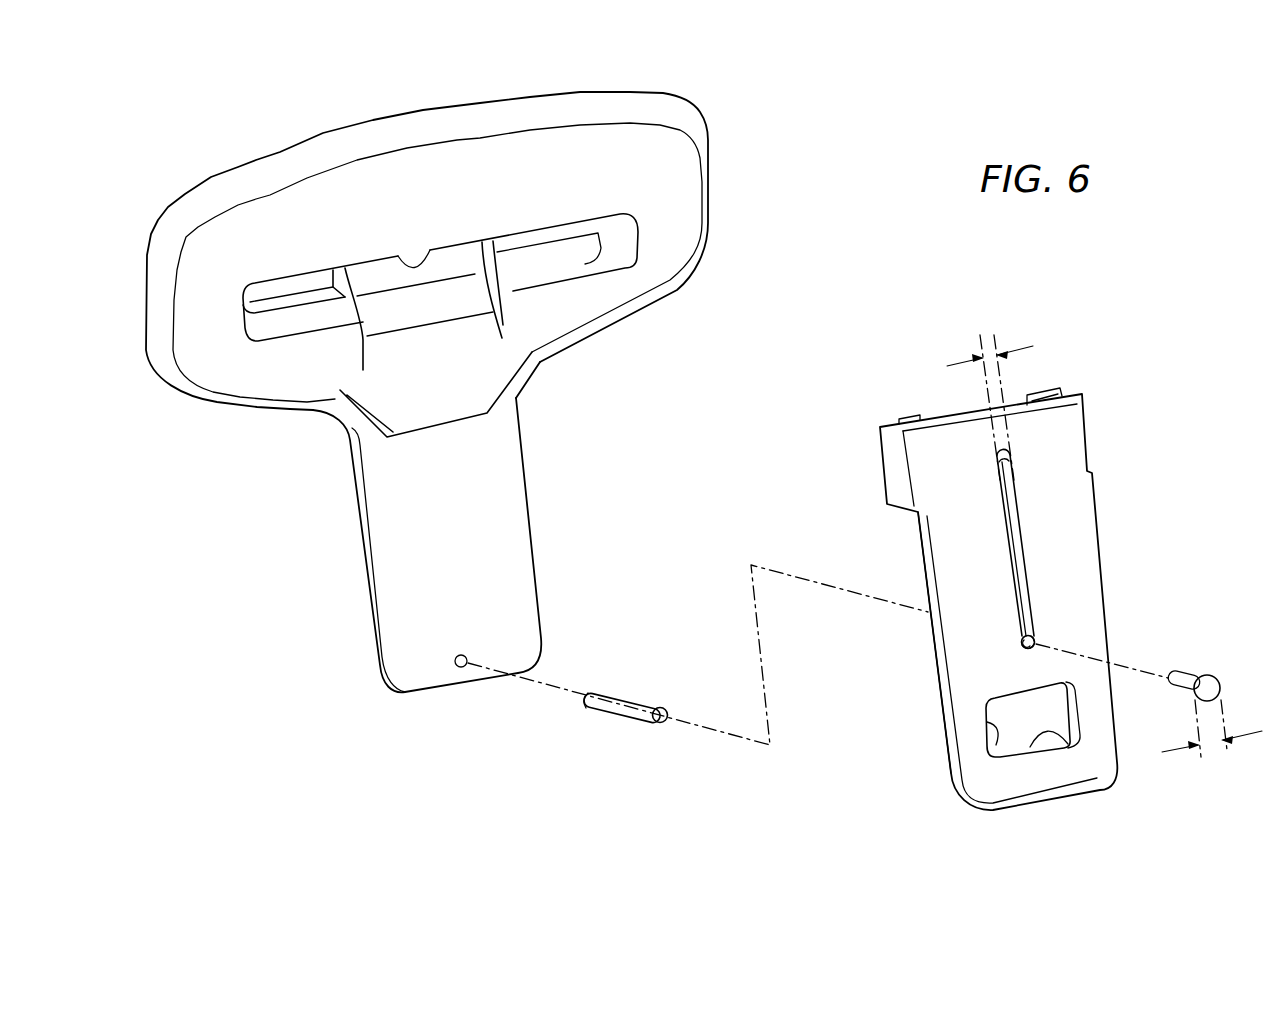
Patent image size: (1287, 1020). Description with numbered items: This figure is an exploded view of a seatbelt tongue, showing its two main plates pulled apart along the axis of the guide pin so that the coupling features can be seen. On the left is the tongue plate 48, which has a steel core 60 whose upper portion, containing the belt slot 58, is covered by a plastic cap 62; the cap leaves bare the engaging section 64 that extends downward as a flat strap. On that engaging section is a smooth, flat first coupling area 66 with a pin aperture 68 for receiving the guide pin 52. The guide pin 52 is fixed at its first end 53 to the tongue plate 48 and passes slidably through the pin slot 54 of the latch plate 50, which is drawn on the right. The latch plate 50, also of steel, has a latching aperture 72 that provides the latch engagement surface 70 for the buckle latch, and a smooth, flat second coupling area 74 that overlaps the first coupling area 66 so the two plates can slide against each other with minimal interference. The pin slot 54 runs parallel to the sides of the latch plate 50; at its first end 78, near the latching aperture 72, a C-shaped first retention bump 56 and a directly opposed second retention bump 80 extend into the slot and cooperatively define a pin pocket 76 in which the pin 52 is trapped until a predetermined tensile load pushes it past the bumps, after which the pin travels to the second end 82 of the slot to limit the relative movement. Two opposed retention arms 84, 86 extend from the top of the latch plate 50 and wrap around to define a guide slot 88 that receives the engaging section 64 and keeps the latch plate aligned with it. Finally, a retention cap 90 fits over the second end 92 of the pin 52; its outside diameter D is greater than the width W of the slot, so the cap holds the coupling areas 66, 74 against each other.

The tongue plate 48 is at (342, 428).
The latch plate 50 is at (1100, 570).
The guide pin 52 is at (616, 714).
The first end 53 is at (586, 696).
The pin slot 54 is at (1011, 492).
The first retention bump 56 is at (1021, 640).
The belt slot 58 is at (404, 262).
The core 60 is at (530, 372).
The plastic cap 62 is at (712, 183).
The engaging section 64 is at (357, 547).
The first coupling area 66 is at (461, 568).
The pin aperture 68 is at (459, 666).
The latch engagement surface 70 is at (1071, 746).
The latching aperture 72 is at (987, 729).
The second coupling area 74 is at (922, 573).
The pin pocket 76 is at (1023, 651).
The first end 78 is at (1036, 642).
The second retention bump 80 is at (1034, 637).
The second end 82 is at (1002, 481).
The retention arm 84 is at (1088, 421).
The retention arm 86 is at (883, 469).
The guide slot 88 is at (905, 424).
The retention cap 90 is at (1211, 674).
The second end 92 is at (670, 714).
The width W is at (1004, 350).
The outside diameter D is at (1222, 728).